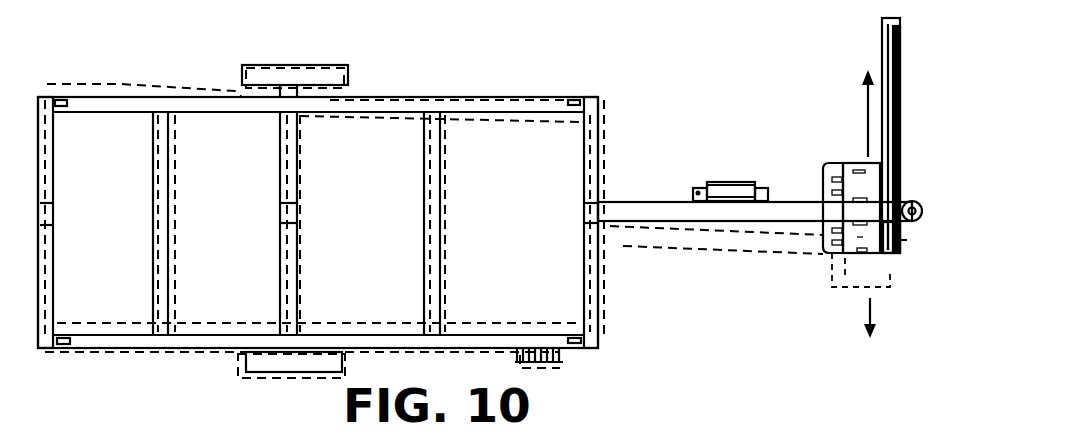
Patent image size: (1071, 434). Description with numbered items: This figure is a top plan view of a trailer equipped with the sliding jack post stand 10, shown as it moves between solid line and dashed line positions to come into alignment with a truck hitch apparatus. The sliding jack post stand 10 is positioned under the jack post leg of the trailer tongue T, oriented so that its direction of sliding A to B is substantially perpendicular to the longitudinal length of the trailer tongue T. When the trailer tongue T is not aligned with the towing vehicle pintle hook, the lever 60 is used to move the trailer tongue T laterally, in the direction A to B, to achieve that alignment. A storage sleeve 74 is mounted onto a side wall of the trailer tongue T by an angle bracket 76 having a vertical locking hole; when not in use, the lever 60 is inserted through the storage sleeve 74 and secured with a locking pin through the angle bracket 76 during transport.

The sliding jack post stand 10 is at (818, 155).
The lever 60 is at (883, 38).
The storage sleeve 74 is at (730, 181).
The angle bracket 76 is at (697, 189).
The trailer tongue T is at (802, 197).
The direction of sliding A is at (868, 108).
The direction of sliding B is at (870, 307).